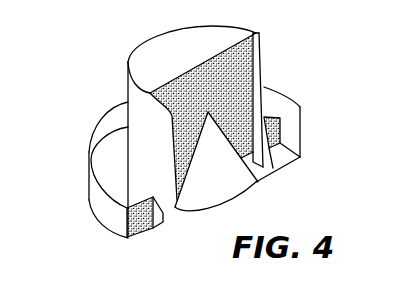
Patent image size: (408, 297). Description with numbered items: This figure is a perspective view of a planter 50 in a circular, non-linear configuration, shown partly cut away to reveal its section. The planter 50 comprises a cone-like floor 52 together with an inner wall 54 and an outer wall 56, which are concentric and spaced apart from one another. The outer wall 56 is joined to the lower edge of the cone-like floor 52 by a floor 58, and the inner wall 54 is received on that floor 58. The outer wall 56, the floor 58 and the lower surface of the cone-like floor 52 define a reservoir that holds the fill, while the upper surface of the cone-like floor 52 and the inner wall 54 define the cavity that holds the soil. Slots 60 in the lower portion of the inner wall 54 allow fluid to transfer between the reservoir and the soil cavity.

The planter 50 is at (95, 81).
The cone-like floor 52 is at (222, 195).
The inner wall 54 is at (254, 66).
The outer wall 56 is at (300, 130).
The floor 58 is at (268, 148).
The slots 60 is at (163, 222).